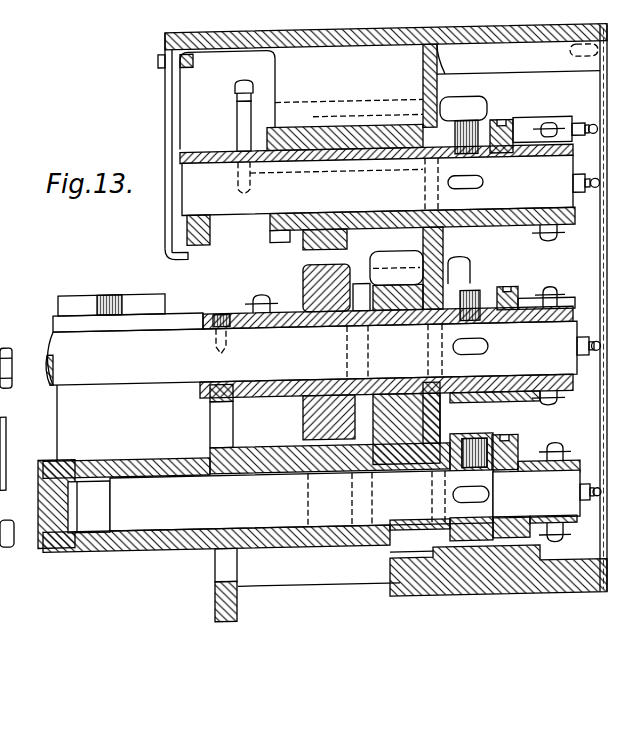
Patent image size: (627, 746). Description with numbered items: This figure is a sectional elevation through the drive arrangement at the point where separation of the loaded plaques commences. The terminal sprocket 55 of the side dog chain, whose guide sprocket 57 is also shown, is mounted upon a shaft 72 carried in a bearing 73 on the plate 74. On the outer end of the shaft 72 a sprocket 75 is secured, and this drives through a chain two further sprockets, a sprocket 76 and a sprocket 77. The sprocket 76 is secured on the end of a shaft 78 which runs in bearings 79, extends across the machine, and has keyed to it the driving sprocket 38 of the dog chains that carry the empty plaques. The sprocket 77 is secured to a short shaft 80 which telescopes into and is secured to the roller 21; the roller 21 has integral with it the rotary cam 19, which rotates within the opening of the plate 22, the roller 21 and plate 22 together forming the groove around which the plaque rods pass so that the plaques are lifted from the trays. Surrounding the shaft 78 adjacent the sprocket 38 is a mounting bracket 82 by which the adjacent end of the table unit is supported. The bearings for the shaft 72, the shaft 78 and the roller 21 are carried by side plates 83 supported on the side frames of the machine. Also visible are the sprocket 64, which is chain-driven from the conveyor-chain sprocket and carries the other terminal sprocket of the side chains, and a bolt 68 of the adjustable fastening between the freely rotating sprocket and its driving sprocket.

The rotary cam 19 is at (213, 568).
The roller 21 is at (86, 468).
The plate 22 is at (242, 603).
The driving sprocket 38 is at (325, 424).
The terminal sprocket 55 is at (210, 238).
The guide sprocket 57 is at (238, 89).
The sprocket 64 is at (0, 401).
The bolt 68 is at (1, 340).
The shaft 72 is at (320, 212).
The bearing 73 is at (290, 137).
The plate 74 is at (437, 65).
The sprocket 75 is at (553, 243).
The sprocket 76 is at (548, 410).
The sprocket 77 is at (557, 450).
The shaft 78 is at (160, 360).
The bearing 79 is at (303, 297).
The short shaft 80 is at (280, 512).
The mounting bracket 82 is at (245, 307).
The side plate 83 is at (448, 271).